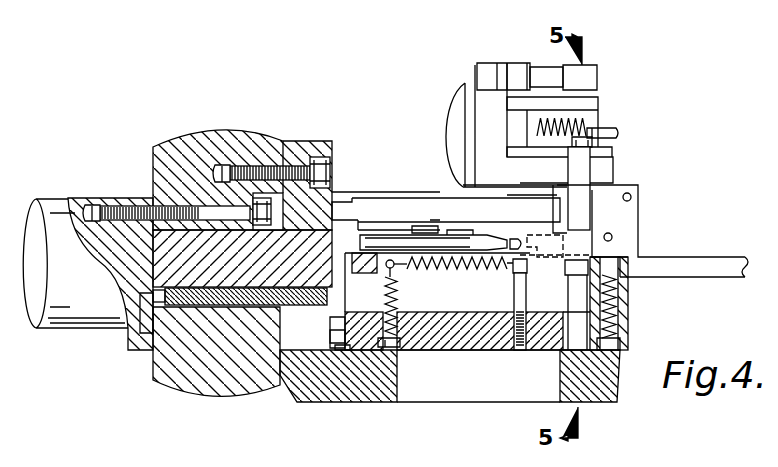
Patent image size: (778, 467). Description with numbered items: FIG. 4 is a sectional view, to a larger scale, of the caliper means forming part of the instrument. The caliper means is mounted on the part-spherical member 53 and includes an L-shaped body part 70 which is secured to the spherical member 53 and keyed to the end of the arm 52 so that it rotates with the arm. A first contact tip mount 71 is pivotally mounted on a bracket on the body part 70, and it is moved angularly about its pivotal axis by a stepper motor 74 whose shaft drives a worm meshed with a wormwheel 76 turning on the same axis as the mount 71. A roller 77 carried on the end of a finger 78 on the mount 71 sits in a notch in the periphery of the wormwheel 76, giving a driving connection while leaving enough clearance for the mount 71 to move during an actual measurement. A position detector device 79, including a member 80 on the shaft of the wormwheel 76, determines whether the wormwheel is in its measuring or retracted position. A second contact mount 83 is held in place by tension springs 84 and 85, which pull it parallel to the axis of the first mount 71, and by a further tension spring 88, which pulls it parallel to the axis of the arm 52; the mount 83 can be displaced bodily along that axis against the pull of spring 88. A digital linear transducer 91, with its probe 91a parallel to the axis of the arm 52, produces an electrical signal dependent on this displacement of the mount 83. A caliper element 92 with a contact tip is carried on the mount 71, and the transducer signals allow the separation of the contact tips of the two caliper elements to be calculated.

The arm 52 is at (52, 210).
The part-spherical member 53 is at (197, 150).
The L-shaped body part 70 is at (372, 390).
The contact tip mount 71 is at (448, 205).
The stepper motor 74 is at (452, 103).
The wormwheel 76 is at (620, 132).
The roller 77 is at (587, 139).
The finger 78 is at (582, 200).
The position detector device 79 is at (524, 50).
The member 80 is at (498, 72).
The second contact mount 83 is at (460, 275).
The tension spring 84 is at (347, 350).
The tension spring 85 is at (620, 305).
The tension spring 88 is at (418, 270).
The digital linear transducer 91 is at (362, 228).
The probe 91a is at (510, 248).
The caliper element 92 is at (667, 267).